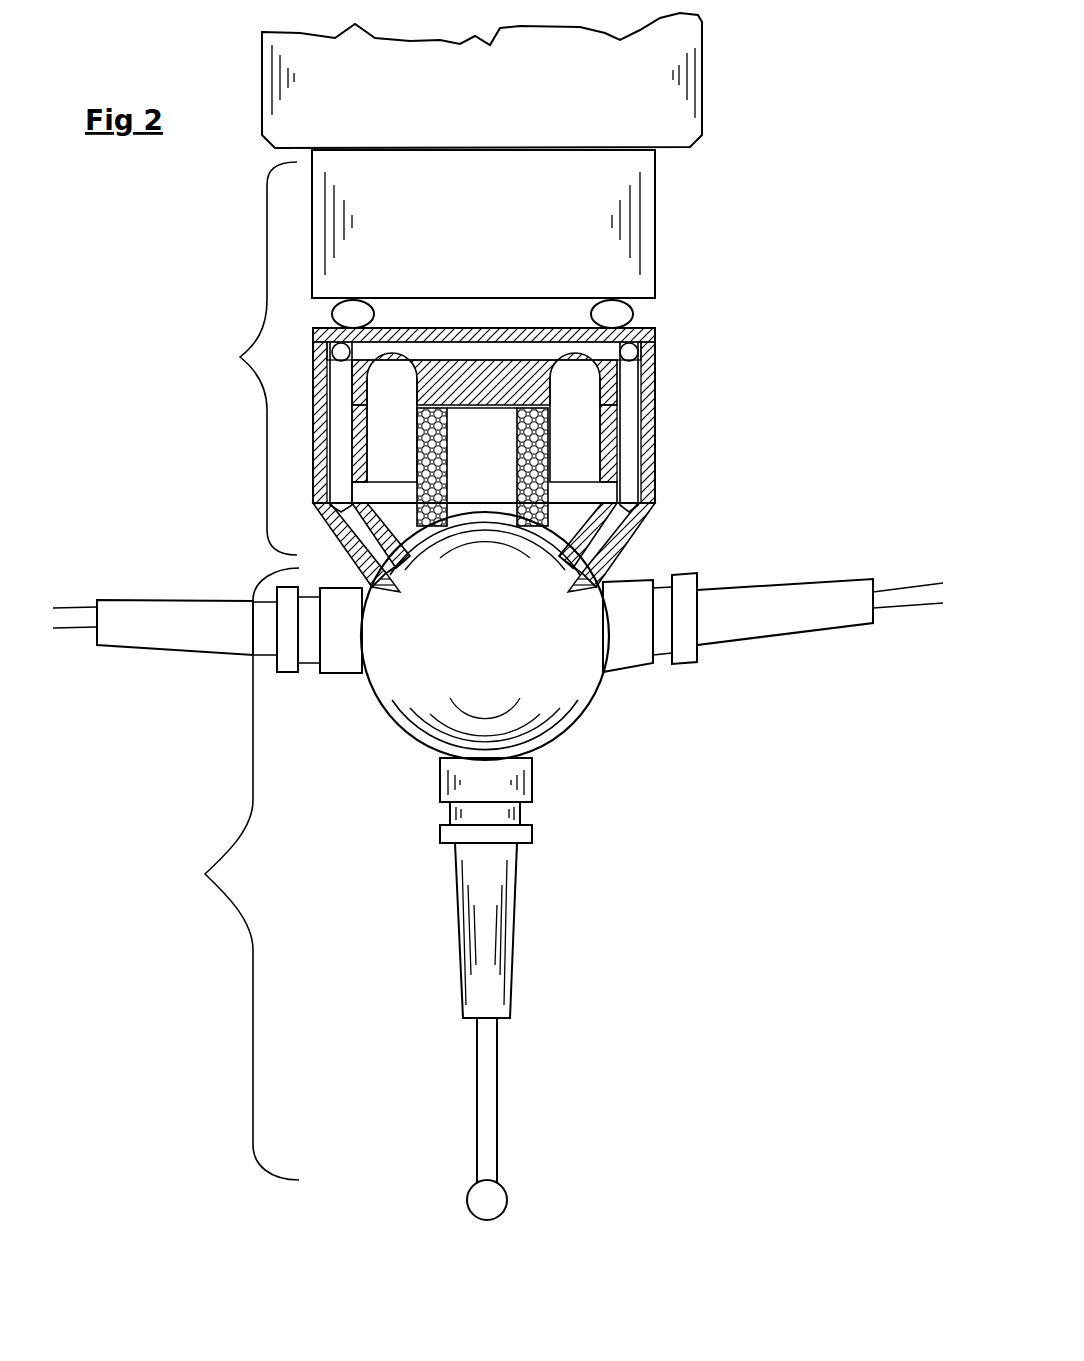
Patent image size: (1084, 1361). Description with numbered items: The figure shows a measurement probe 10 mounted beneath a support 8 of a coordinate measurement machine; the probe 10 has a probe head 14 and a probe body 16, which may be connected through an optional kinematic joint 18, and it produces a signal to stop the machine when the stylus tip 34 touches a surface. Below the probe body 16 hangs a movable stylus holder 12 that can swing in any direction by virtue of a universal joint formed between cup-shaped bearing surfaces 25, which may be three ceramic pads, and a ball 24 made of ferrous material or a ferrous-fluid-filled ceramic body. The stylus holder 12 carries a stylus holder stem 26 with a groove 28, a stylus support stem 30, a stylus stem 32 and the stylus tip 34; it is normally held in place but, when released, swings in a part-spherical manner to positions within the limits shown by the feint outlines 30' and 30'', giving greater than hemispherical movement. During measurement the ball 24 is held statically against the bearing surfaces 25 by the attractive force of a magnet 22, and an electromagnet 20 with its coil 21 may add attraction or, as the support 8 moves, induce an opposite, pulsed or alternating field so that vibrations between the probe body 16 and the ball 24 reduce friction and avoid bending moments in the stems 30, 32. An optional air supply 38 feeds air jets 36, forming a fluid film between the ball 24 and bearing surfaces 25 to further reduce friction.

The support 8 is at (482, 80).
The probe head 14 is at (483, 224).
The probe 10 is at (240, 357).
The stylus holder 12 is at (205, 874).
The kinematic joint 18 is at (623, 312).
The probe body 16 is at (653, 358).
The air supply 38 is at (317, 353).
The magnet 22 is at (493, 450).
The coil 21 is at (587, 466).
The electromagnet 20 is at (617, 523).
The bearing surfaces 25 is at (482, 567).
The air jets 36 is at (576, 627).
The ball 24 is at (578, 693).
The stylus holder stem 26 is at (532, 767).
The groove 28 is at (525, 812).
The stylus support stem 30 is at (595, 930).
The feint outline 30' is at (798, 618).
The feint outline 30'' is at (186, 629).
The stylus stem 32 is at (483, 1058).
The stylus tip 34 is at (487, 1193).